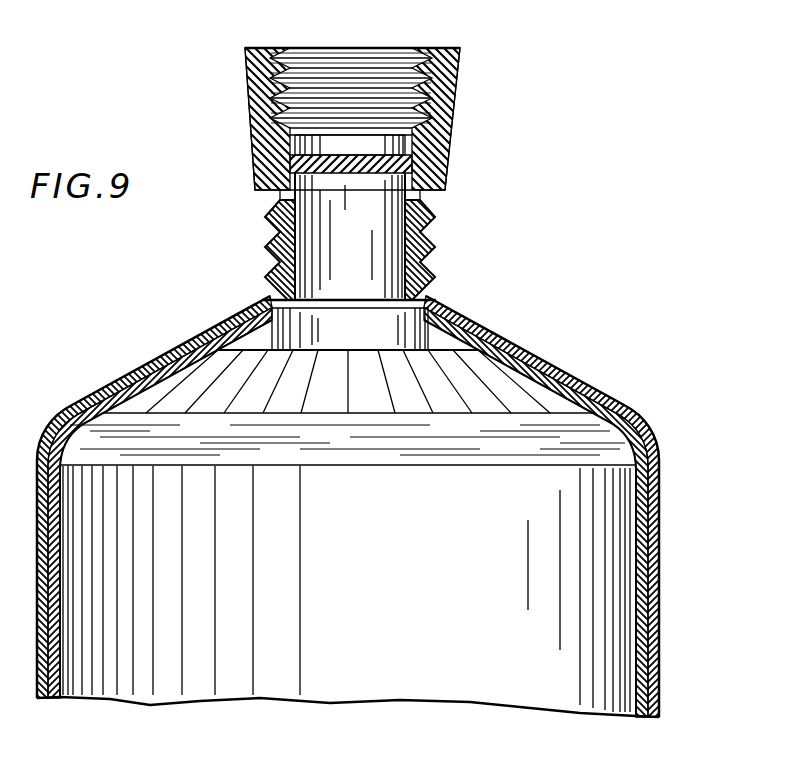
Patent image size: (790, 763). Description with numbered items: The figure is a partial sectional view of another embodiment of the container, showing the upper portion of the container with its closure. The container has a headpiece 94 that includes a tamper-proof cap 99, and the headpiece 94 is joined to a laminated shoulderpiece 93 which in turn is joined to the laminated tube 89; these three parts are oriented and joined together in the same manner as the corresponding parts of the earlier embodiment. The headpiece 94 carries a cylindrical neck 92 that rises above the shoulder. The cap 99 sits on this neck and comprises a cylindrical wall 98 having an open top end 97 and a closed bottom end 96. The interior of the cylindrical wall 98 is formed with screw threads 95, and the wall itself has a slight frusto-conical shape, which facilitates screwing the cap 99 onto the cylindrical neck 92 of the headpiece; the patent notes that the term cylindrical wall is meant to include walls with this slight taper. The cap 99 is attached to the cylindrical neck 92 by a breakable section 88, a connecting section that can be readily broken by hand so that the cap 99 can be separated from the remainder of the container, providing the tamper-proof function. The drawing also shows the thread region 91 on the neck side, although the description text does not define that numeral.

The breakable section 88 is at (413, 198).
The laminated tube 89 is at (659, 521).
The external thread on neck 91 is at (265, 259).
The cylindrical neck 92 is at (436, 246).
The laminated shoulderpiece 93 is at (558, 368).
The headpiece 94 is at (432, 302).
The screw threads 95 is at (278, 84).
The closed bottom end 96 is at (345, 182).
The open top end 97 is at (332, 58).
The cylindrical wall 98 is at (252, 91).
The tamper-proof cap 99 is at (452, 126).